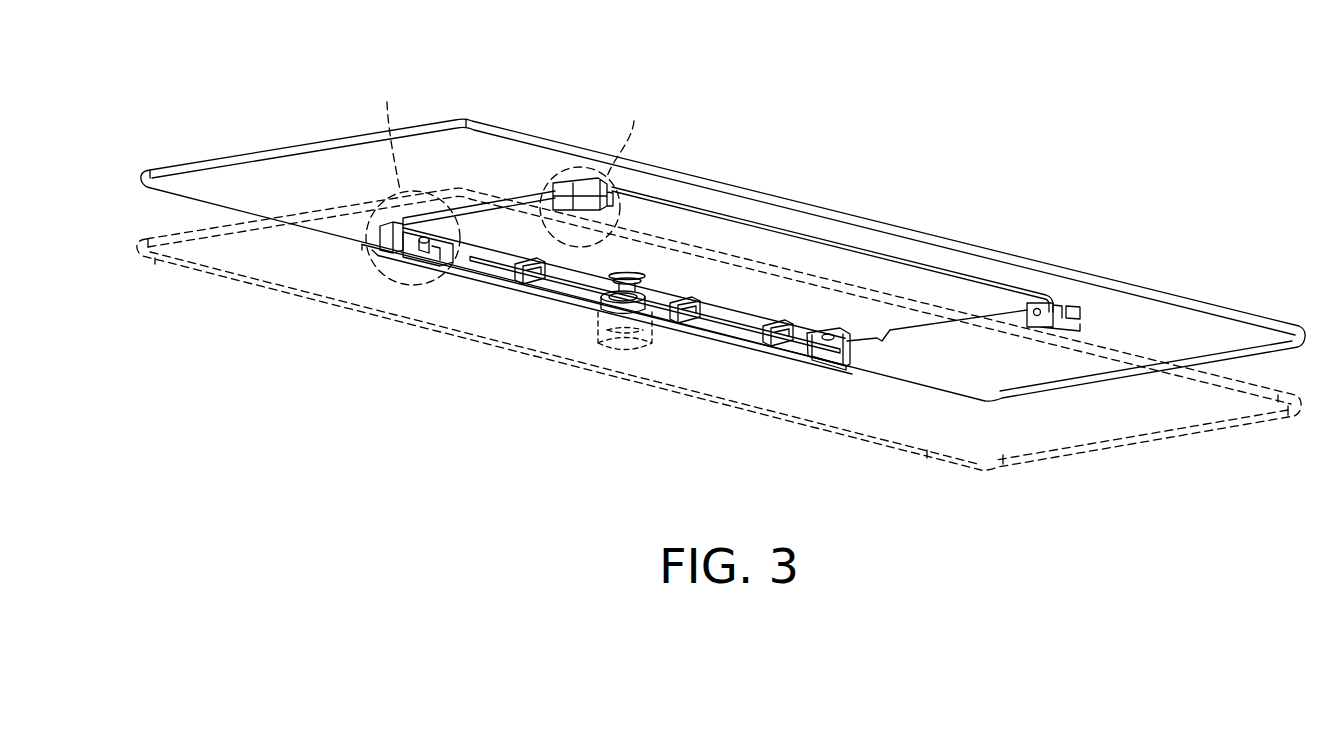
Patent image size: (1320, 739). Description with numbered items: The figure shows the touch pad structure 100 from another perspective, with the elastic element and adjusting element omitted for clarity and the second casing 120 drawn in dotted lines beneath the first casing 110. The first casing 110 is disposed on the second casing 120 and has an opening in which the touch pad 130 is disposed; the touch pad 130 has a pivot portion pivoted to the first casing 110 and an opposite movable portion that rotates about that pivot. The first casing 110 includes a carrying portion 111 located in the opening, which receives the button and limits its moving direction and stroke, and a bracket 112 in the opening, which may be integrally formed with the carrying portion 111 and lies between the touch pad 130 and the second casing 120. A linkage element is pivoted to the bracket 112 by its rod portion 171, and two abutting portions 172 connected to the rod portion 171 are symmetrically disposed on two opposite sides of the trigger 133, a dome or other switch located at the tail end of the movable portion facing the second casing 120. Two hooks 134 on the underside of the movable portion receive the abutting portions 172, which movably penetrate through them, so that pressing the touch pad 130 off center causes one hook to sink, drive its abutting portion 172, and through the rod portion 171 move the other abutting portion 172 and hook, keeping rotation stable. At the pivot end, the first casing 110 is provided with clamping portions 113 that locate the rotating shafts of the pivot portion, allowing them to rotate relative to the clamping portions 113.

The touch pad structure 100 is at (1108, 158).
The first casing 110 is at (230, 157).
The second casing 120 is at (247, 287).
The touch pad 130 is at (776, 282).
The carrying portion 111 is at (590, 300).
The bracket 112 is at (490, 278).
The clamping portion 113 is at (567, 180).
The trigger 133 is at (637, 273).
The hooks 134 is at (433, 233).
The rod portion 171 is at (537, 282).
The abutting portions 172 is at (422, 263).